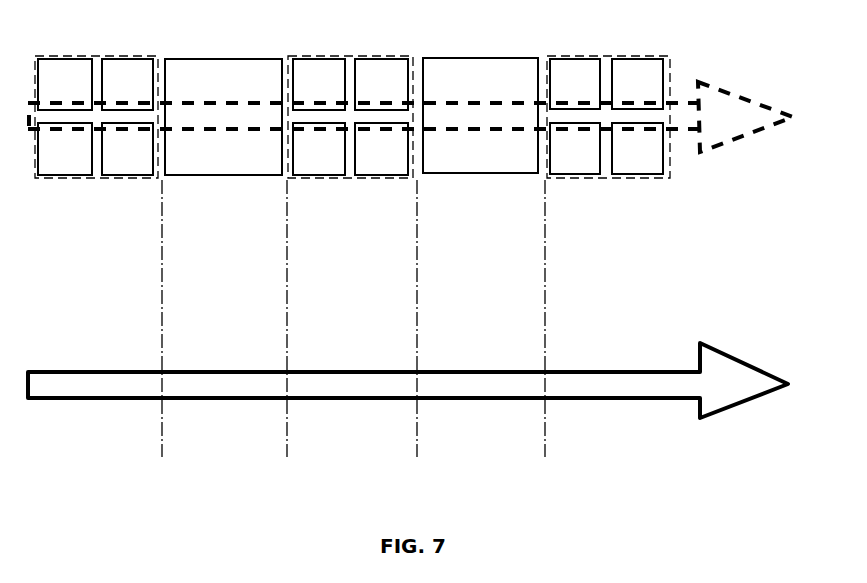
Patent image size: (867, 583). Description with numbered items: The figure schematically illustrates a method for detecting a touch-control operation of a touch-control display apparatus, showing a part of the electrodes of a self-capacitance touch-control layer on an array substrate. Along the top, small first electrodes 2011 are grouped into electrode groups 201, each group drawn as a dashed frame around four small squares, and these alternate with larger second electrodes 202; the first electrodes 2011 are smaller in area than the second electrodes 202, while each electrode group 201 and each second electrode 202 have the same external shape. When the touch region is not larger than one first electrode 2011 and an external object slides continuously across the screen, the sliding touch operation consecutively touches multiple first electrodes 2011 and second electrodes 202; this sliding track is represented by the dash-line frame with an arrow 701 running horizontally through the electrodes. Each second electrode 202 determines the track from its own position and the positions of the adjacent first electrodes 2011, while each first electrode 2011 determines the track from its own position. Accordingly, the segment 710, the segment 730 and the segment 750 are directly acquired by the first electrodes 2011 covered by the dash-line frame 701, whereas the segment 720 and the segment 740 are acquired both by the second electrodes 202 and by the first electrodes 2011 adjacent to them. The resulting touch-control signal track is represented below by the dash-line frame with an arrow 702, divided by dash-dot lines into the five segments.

The electrode group 201 is at (352, 53).
The first electrode 2011 is at (387, 65).
The second electrode 202 is at (493, 70).
The dash-line frame with an arrow 701 is at (740, 135).
The dash-line frame with an arrow 702 is at (727, 350).
The segment 710 is at (98, 383).
The segment 720 is at (218, 383).
The segment 730 is at (379, 239).
The segment 740 is at (488, 246).
The segment 750 is at (593, 382).